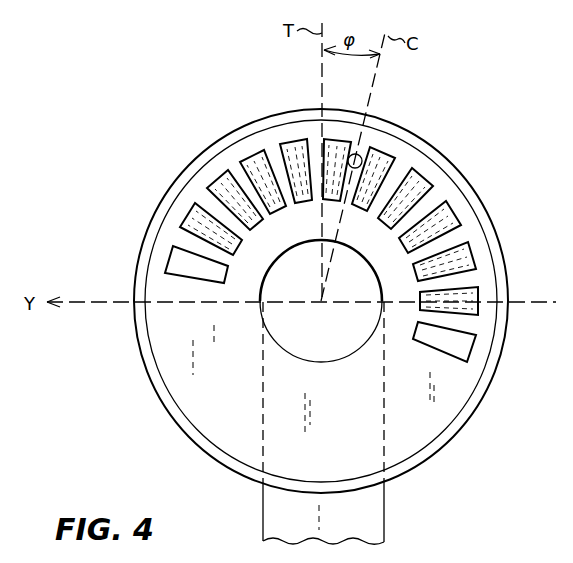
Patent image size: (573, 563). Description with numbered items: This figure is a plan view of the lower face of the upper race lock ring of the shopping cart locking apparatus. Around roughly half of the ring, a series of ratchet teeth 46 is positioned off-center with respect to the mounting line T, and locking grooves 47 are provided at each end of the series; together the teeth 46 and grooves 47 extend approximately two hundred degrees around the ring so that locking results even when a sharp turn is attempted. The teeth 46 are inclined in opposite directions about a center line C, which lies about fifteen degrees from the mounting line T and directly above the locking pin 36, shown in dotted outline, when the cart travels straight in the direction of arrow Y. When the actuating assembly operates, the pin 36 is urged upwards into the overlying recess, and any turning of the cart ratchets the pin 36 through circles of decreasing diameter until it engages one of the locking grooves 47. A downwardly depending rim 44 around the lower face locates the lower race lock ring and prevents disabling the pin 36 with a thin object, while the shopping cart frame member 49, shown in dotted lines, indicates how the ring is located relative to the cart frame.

The locking pin 36 is at (360, 150).
The downwardly depending rim 44 is at (497, 258).
The ratchet teeth 46 is at (458, 222).
The locking grooves 47 is at (476, 342).
The shopping cart frame member 49 is at (384, 520).